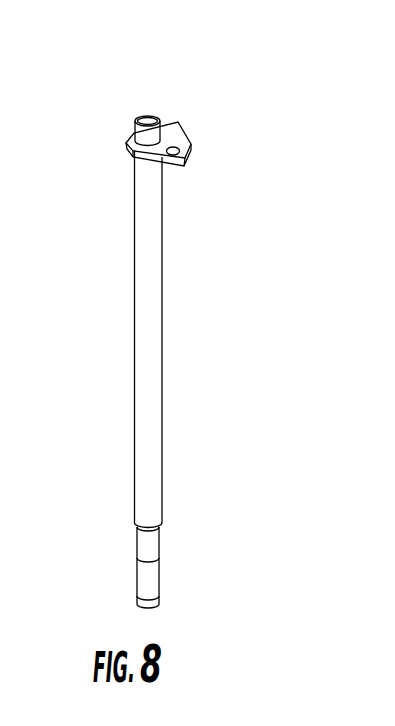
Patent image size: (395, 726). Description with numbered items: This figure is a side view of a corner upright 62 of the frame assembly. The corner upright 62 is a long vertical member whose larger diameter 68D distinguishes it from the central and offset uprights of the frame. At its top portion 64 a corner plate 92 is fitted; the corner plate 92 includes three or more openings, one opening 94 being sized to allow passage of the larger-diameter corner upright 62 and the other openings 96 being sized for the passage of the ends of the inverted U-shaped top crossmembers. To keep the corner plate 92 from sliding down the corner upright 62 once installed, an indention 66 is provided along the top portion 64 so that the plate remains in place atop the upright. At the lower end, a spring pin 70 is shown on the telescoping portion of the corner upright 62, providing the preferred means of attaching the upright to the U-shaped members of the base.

The corner upright 62 is at (221, 259).
The top portion 64 is at (149, 137).
The indention 66 is at (135, 156).
The larger diameter 68D is at (148, 126).
The spring pin 70 is at (145, 580).
The corner plate 92 is at (178, 137).
The opening 94 is at (126, 143).
The openings 96 is at (183, 148).